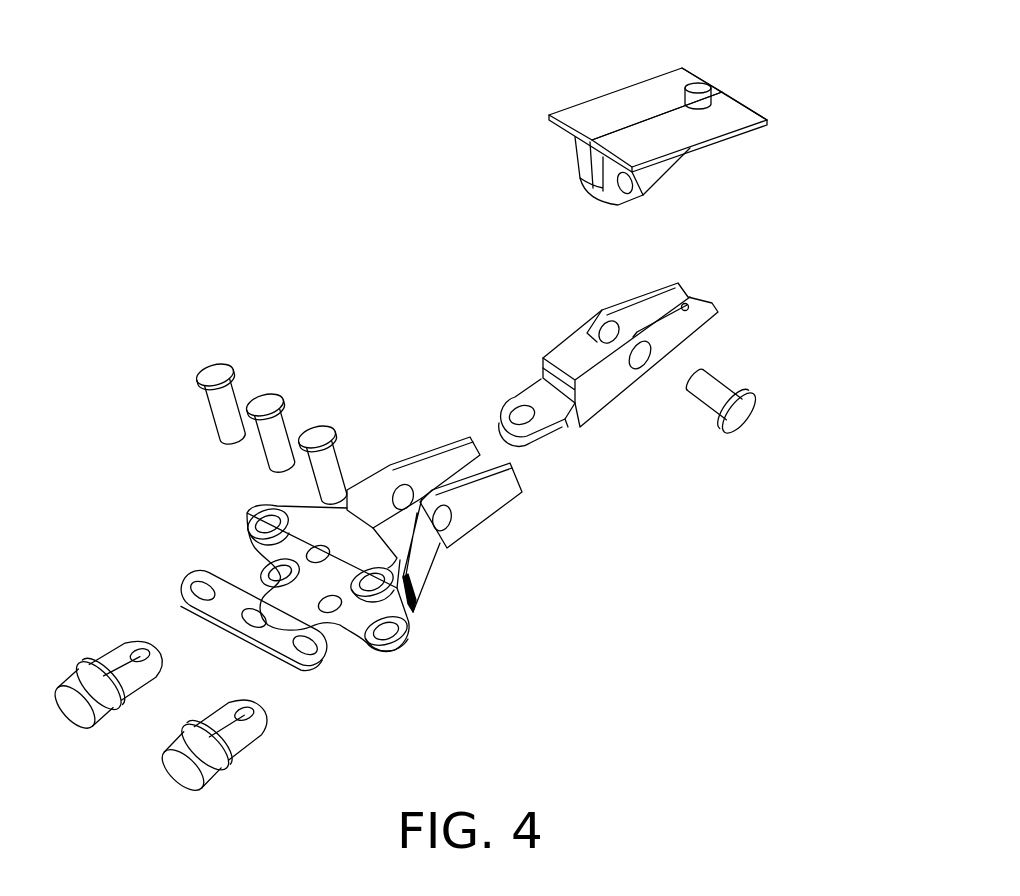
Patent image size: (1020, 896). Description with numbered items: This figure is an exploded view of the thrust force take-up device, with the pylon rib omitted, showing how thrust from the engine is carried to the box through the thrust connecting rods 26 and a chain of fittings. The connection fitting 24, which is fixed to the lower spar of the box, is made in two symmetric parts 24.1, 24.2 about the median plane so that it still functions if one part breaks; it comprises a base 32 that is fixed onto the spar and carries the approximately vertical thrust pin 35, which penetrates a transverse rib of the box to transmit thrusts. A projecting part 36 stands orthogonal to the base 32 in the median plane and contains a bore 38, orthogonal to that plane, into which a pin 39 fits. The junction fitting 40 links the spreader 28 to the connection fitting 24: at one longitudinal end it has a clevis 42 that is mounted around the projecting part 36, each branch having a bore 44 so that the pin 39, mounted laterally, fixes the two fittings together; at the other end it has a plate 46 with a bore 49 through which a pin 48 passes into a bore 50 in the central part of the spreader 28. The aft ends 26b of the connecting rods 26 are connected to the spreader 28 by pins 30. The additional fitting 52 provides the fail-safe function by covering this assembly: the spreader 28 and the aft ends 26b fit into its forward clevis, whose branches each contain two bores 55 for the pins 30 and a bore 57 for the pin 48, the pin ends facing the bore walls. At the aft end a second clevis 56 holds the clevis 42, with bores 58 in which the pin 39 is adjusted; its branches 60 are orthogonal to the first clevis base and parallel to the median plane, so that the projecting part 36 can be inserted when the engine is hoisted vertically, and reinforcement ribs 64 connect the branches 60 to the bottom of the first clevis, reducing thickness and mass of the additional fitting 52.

The connection fitting 24 is at (750, 145).
The first part of the connection fitting 24.1 is at (598, 108).
The second part of the connection fitting 24.2 is at (672, 135).
The base 32 is at (742, 100).
The thrust pin 35 is at (698, 84).
The projecting part 36 is at (598, 161).
The bore 38 is at (632, 184).
The junction fitting 40 is at (574, 317).
The clevis 42 is at (722, 332).
The bore 44 is at (645, 366).
The plate 46 is at (568, 431).
The bore 49 is at (524, 406).
The pin 39 is at (706, 392).
The pins 30 is at (218, 368).
The pin 48 is at (267, 398).
The additional fitting 52 is at (491, 536).
The second clevis 56 is at (445, 437).
The bores 58 is at (377, 520).
The branches 60 is at (508, 491).
The reinforcement ribs 64 is at (436, 579).
The bores 55 is at (262, 546).
The bore 57 is at (317, 552).
The bore 50 is at (246, 628).
The spreader 28 is at (186, 564).
The thrust connecting rods 26 is at (66, 668).
The aft ends of the connecting rods 26b is at (133, 650).